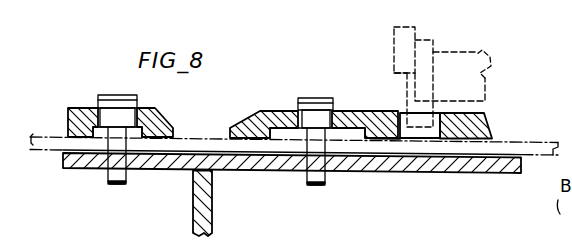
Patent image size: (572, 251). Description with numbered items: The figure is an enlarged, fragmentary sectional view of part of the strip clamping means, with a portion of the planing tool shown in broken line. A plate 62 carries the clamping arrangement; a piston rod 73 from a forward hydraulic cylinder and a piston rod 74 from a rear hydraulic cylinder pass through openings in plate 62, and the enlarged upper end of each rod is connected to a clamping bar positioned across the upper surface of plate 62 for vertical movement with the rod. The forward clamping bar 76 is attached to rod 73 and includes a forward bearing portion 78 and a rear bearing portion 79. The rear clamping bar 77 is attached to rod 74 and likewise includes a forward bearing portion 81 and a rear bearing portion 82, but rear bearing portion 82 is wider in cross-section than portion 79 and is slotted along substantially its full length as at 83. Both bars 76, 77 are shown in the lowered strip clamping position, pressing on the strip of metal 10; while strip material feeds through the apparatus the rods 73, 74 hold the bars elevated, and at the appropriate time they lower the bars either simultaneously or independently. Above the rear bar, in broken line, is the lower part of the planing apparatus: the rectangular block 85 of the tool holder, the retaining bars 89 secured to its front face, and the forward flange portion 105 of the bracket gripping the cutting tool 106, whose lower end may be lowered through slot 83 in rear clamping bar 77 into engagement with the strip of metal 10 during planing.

The strip of metal 10 is at (539, 143).
The plate 62 is at (507, 171).
The piston rod 73 is at (117, 143).
The piston rod 74 is at (313, 148).
The forward clamping bar 76 is at (88, 108).
The rear clamping bar 77 is at (350, 111).
The forward bearing portion 78 is at (75, 132).
The rear bearing portion 79 is at (158, 128).
The forward bearing portion 81 is at (252, 112).
The rear bearing portion 82 is at (387, 140).
The slot 83 is at (423, 138).
The rectangular block 85 is at (484, 62).
The retaining bars 89 is at (428, 55).
The forward flange portion 105 is at (400, 50).
The cutting tool 106 is at (406, 95).